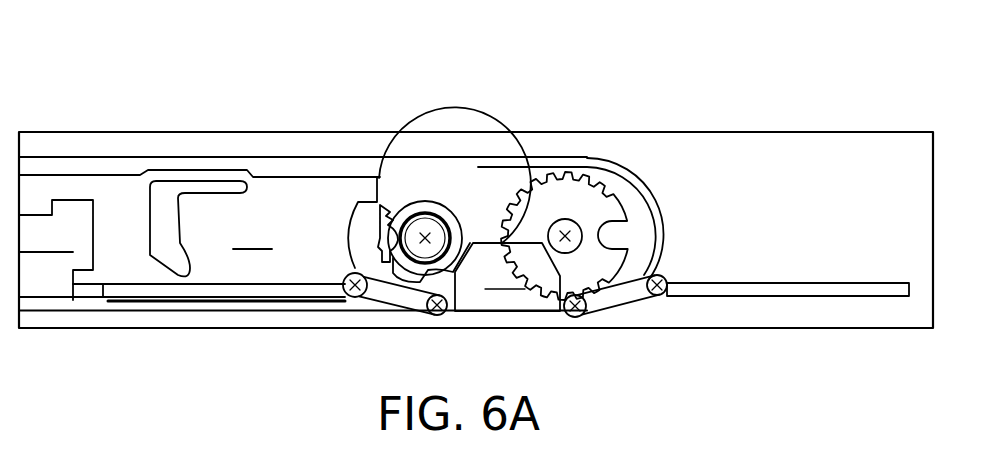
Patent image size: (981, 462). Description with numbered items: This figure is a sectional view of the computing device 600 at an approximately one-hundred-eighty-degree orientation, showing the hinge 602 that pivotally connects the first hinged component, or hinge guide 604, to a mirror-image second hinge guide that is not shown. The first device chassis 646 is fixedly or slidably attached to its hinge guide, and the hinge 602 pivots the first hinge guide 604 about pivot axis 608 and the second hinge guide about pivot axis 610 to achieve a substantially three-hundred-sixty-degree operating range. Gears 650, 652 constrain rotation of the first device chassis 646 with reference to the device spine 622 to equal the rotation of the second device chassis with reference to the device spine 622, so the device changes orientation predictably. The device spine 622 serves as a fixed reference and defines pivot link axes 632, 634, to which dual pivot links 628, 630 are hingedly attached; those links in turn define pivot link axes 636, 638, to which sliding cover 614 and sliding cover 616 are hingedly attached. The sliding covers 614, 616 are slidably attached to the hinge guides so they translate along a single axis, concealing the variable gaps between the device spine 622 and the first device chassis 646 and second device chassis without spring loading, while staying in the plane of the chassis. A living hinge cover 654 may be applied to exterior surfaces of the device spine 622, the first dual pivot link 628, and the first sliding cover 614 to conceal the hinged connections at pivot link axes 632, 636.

The computing device 600 is at (333, 107).
The hinge 602 is at (672, 238).
The first hinged component (hinge guide) 604 is at (198, 239).
The pivot axis 608 is at (422, 236).
The pivot axis 610 is at (570, 232).
The sliding cover 614 is at (138, 290).
The sliding cover 616 is at (810, 290).
The device spine 622 is at (507, 277).
The dual pivot link 628 is at (400, 295).
The dual pivot link 630 is at (627, 298).
The pivot link axis 632 is at (430, 312).
The pivot link axis 634 is at (584, 312).
The pivot link axis 636 is at (347, 284).
The pivot link axis 638 is at (670, 290).
The first device chassis 646 is at (267, 165).
The gear 650 is at (386, 216).
The gear 652 is at (568, 198).
The living hinge cover 654 is at (440, 316).